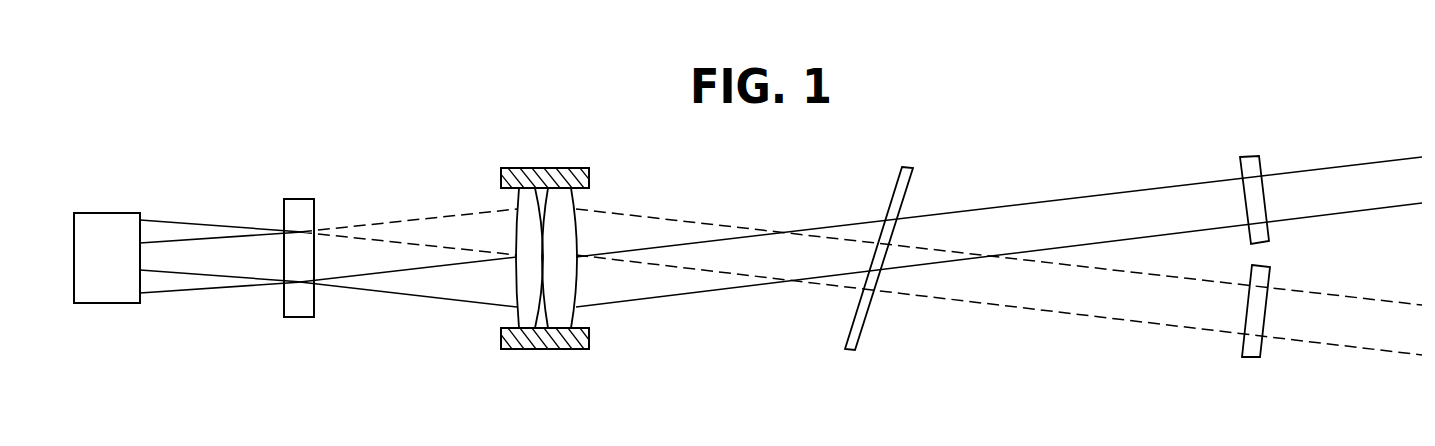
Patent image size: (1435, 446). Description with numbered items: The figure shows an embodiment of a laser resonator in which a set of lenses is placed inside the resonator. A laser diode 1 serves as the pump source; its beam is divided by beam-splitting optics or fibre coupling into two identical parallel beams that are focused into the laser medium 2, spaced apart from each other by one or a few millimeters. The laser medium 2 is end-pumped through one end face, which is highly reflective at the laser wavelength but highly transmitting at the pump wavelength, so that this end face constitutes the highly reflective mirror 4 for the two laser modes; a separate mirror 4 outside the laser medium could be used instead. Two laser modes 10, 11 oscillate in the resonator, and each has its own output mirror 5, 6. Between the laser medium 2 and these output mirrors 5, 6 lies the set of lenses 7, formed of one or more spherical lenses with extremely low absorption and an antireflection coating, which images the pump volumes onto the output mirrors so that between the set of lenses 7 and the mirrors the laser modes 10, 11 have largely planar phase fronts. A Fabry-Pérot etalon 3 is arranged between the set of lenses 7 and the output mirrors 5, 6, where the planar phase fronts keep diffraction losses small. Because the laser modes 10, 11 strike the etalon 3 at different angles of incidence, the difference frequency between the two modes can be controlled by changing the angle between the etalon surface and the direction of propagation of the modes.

The laser diode 1 is at (108, 213).
The laser medium 2 is at (297, 203).
The Fabry-Pérot etalon 3 is at (897, 192).
The highly reflective mirror 4 is at (283, 213).
The output mirror 5 is at (1258, 163).
The output mirror 6 is at (1257, 345).
The set of lenses 7 is at (533, 168).
The laser mode 10 is at (1107, 203).
The laser mode 11 is at (1108, 308).